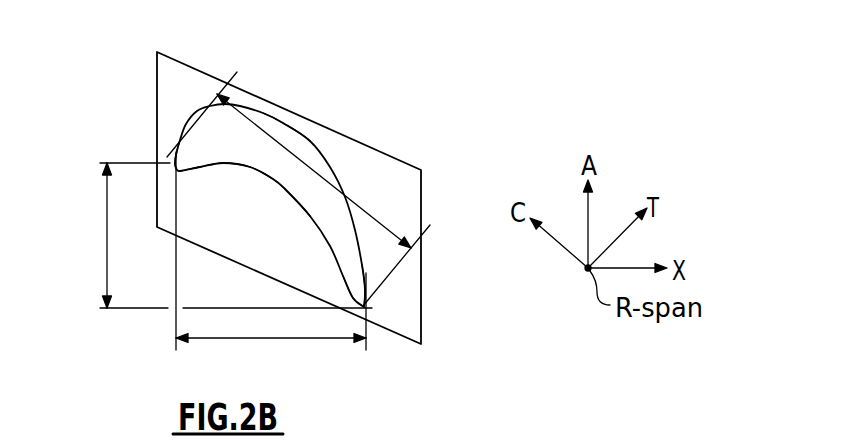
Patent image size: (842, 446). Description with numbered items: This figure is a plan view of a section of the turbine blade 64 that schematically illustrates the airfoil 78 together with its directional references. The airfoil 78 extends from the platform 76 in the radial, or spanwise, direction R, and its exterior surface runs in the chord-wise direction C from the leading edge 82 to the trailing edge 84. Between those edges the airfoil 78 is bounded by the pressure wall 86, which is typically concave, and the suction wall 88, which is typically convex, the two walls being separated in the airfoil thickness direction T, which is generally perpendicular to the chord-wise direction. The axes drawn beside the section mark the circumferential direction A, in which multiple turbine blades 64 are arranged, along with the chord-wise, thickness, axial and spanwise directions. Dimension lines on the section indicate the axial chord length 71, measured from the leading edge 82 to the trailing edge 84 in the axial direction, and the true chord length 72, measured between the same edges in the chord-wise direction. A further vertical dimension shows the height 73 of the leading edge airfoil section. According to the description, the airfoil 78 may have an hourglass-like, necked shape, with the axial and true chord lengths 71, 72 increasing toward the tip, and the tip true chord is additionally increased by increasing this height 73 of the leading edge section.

The turbine blade 64 is at (389, 101).
The axial chord length 71 is at (270, 339).
The true chord length 72 is at (345, 136).
The height 73 is at (107, 230).
The platform 76 is at (214, 72).
The airfoil 78 is at (192, 175).
The leading edge 82 is at (175, 163).
The trailing edge 84 is at (362, 312).
The pressure wall 86 is at (285, 190).
The suction wall 88 is at (288, 119).